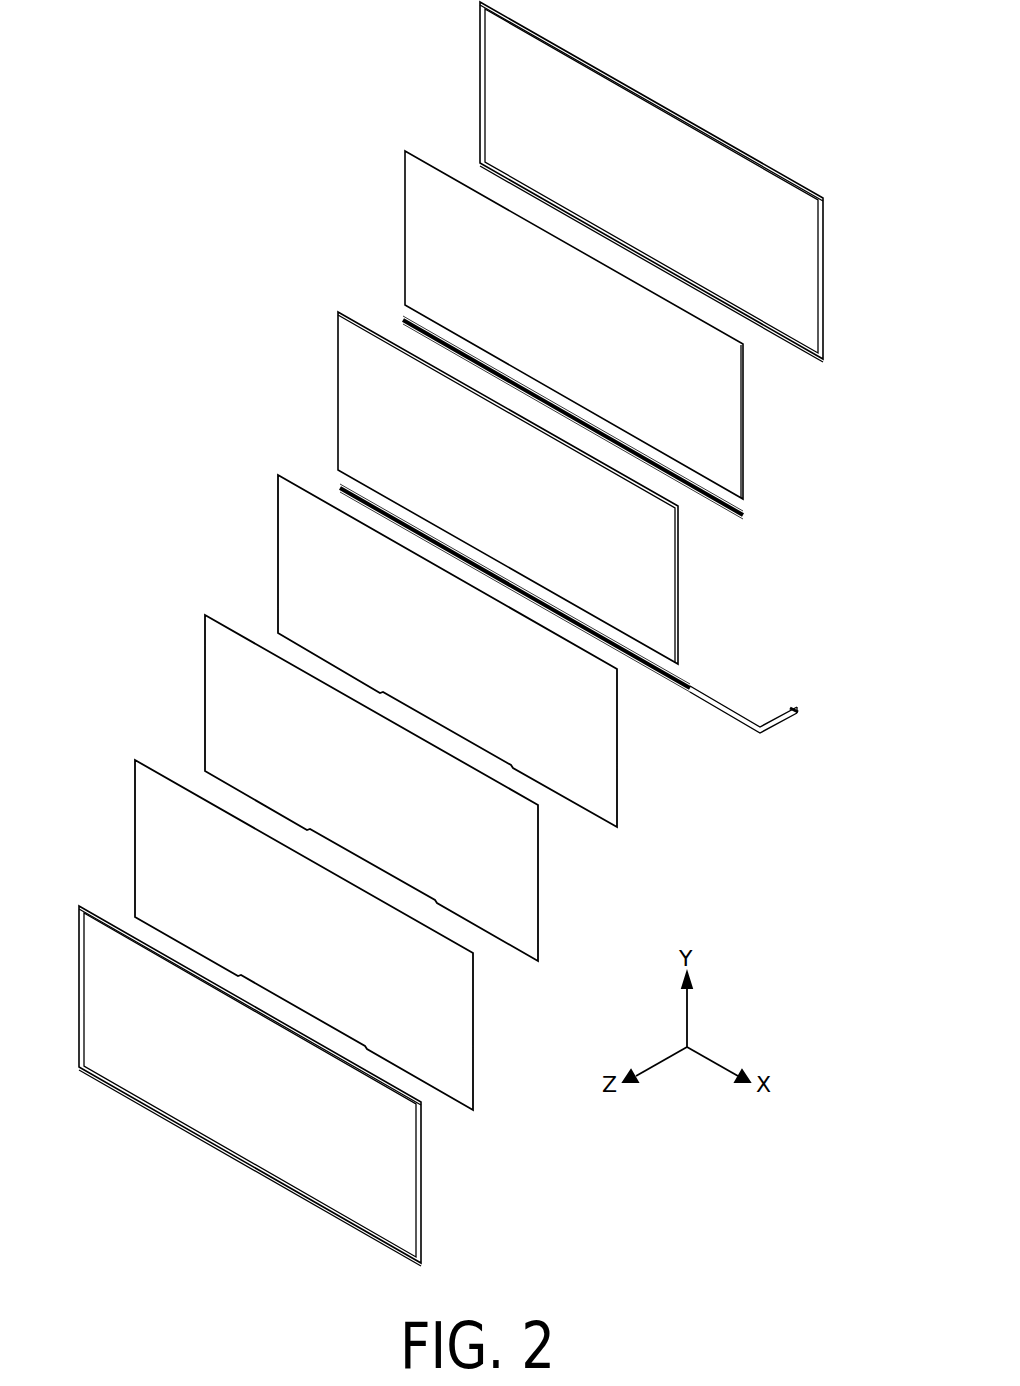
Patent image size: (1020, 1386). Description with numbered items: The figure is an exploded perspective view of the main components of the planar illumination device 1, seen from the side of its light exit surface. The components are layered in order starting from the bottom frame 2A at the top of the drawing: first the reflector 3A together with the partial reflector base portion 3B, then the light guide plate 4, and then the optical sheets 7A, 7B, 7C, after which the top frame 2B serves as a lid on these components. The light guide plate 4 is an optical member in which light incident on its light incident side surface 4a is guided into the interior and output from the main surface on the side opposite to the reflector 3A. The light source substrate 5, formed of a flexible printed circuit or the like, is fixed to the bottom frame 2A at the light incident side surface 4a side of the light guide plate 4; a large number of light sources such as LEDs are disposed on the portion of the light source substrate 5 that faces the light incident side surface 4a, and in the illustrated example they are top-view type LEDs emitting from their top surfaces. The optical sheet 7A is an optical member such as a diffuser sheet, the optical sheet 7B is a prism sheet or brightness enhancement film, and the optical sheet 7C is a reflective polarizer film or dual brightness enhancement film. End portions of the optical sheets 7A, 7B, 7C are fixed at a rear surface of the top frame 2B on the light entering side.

The planar illumination device 1 is at (316, 186).
The bottom frame 2A is at (824, 234).
The reflector 3A is at (745, 392).
The partial reflector base portion 3B is at (745, 518).
The light guide plate 4 is at (680, 589).
The light incident side surface 4a is at (662, 660).
The light source substrate 5 is at (743, 718).
The optical sheet 7A is at (618, 758).
The optical sheet 7B is at (539, 880).
The optical sheet 7C is at (474, 1030).
The top frame 2B is at (422, 1200).